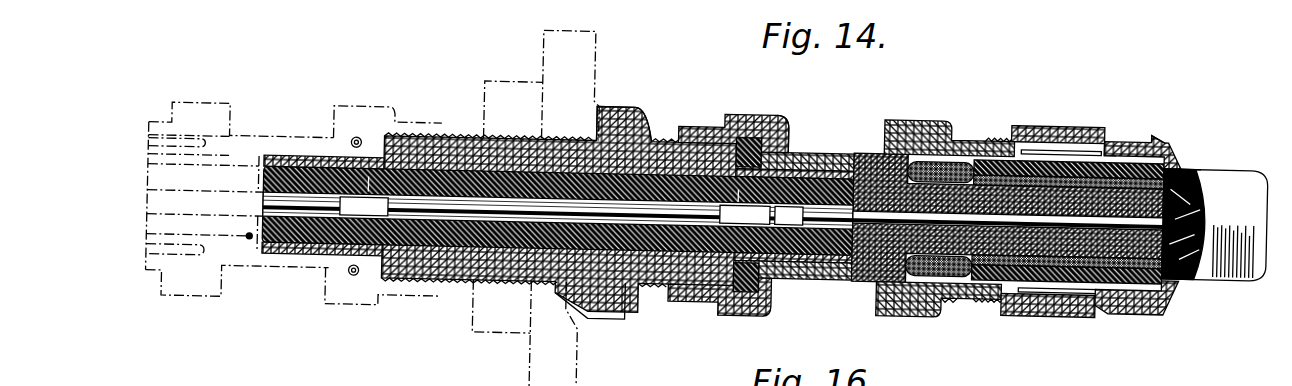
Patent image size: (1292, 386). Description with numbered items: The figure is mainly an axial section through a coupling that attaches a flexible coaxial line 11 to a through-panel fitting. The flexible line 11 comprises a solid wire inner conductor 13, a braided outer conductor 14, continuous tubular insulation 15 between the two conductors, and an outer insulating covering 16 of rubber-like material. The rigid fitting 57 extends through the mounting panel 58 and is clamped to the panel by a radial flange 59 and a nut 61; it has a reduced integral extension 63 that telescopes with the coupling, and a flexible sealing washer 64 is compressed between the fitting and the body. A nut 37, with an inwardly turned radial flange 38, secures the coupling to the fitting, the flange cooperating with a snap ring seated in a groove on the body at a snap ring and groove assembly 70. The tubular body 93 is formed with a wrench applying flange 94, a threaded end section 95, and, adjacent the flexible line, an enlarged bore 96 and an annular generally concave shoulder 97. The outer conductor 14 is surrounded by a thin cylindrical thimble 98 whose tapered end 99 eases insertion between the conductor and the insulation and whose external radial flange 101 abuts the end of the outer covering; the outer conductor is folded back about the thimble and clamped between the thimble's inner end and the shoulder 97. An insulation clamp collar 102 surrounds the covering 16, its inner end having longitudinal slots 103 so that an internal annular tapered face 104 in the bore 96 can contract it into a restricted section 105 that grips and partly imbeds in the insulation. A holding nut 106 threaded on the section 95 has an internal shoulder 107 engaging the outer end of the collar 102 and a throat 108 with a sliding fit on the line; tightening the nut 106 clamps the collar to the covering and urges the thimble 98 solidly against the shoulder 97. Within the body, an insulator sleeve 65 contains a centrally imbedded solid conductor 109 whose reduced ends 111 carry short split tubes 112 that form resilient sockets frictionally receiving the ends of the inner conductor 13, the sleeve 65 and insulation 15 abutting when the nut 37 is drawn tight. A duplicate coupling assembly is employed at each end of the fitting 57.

The flexible coaxial conductor transmission line 11 is at (1252, 277).
The inner conductor 13 is at (1212, 208).
The outer conductor 14 is at (1212, 190).
The tubular insulation 15 is at (858, 177).
The outer insulating covering 16 is at (1190, 162).
The nut 37 is at (368, 107).
The radial flange 38 is at (783, 147).
The rigid fitting 57 is at (453, 150).
The mounting panel 58 is at (582, 52).
The radial flange 59 is at (618, 115).
The nut 61 is at (504, 90).
The reduced integral extension 63 is at (820, 153).
The flexible sealing washer 64 is at (702, 310).
The insulator sleeve 65 is at (282, 173).
The snap ring and groove assembly 70 is at (770, 137).
The tubular body 93 is at (240, 143).
The wrench applying flange 94 is at (915, 127).
The threaded end section 95 is at (993, 140).
The enlarged bore 96 is at (952, 290).
The annular concave shoulder 97 is at (900, 273).
The thimble 98 is at (992, 297).
The tapered end 99 is at (1098, 293).
The external radial flange 101 is at (967, 155).
The insulation clamp collar 102 is at (1087, 143).
The longitudinal slots 103 is at (1065, 147).
The internal annular tapered face 104 is at (1030, 290).
The restricted section 105 is at (1045, 145).
The holding nut 106 is at (1112, 128).
The internal shoulder 107 is at (1103, 150).
The throat 108 is at (1173, 155).
The solid conductor 109 is at (472, 250).
The reduced end 111 is at (563, 191).
The split tube 112 is at (300, 240).